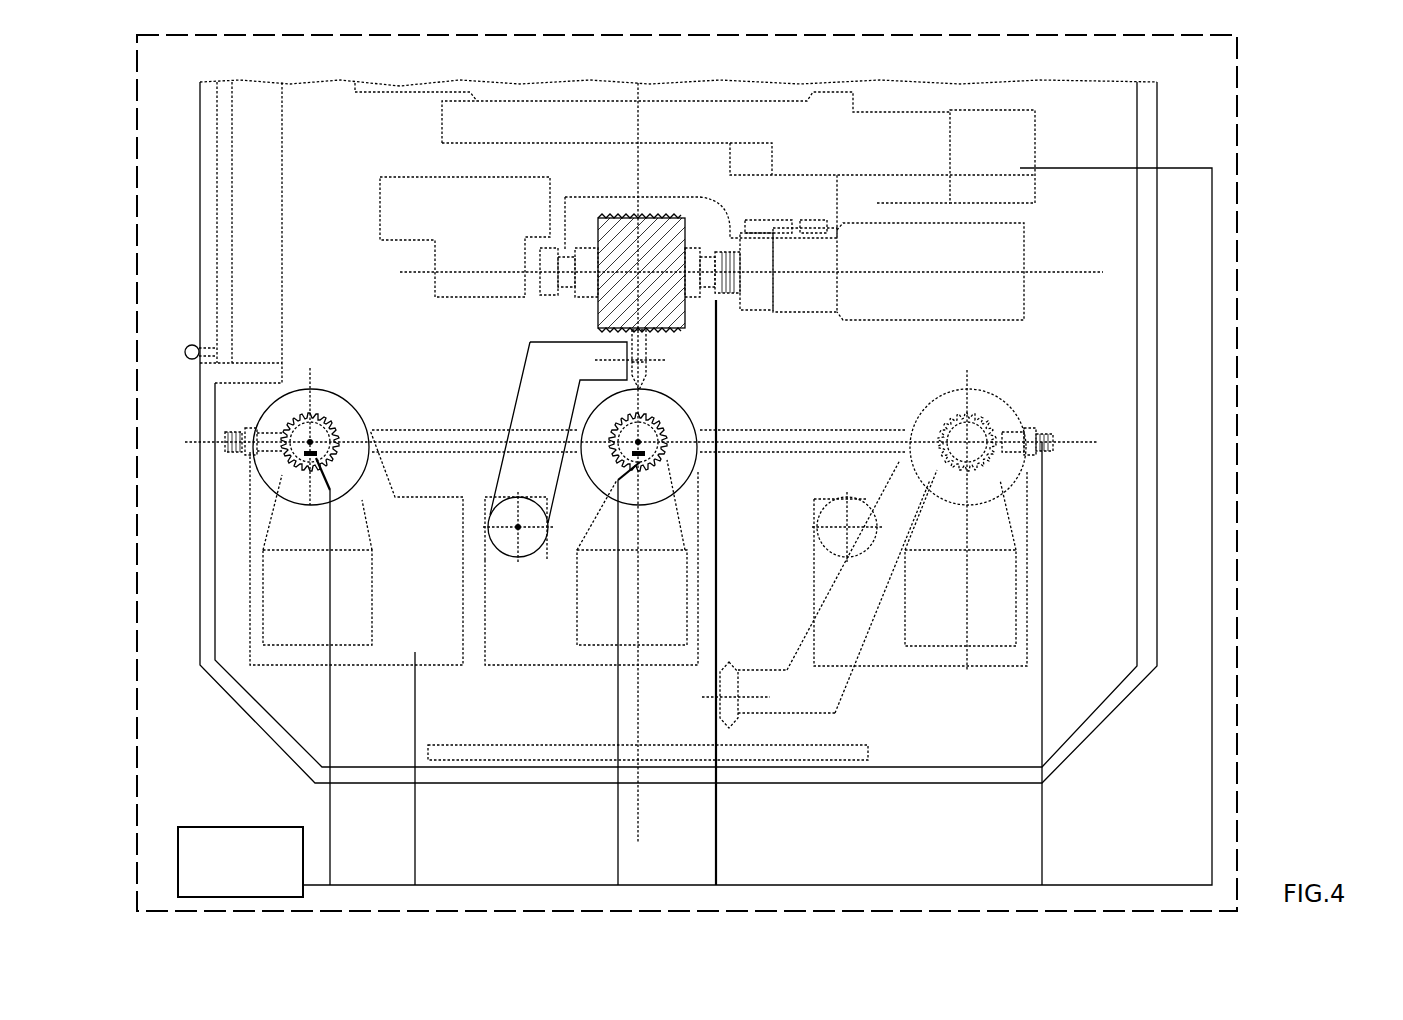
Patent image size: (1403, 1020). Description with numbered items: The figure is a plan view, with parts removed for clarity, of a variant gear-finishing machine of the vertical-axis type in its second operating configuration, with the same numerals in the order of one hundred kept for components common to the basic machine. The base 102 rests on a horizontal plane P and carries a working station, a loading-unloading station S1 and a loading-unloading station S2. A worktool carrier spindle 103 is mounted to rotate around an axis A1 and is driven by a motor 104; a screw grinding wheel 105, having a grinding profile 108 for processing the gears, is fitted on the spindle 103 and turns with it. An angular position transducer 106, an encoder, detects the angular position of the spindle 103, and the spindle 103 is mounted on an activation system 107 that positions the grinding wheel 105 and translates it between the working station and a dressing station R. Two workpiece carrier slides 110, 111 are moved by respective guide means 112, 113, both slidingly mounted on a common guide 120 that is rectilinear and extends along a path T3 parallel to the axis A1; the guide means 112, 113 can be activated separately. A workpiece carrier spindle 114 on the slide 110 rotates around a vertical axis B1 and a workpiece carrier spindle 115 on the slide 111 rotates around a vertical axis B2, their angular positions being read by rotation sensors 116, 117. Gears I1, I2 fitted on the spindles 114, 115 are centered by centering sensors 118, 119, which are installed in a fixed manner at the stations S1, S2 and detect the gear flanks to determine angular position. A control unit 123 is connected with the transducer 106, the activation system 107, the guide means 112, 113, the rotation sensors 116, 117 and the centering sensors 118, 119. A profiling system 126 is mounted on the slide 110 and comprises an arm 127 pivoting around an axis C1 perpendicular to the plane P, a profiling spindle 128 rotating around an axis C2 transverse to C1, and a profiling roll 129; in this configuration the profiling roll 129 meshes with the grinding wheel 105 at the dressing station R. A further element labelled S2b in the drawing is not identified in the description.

The horizontal plane P is at (150, 108).
The base 102 is at (703, 482).
The worktool carrier spindle 103 is at (612, 212).
The motor 104 is at (1024, 240).
The grinding wheel 105 is at (735, 232).
The angular position transducer 106 is at (745, 250).
The activation system 107 is at (975, 108).
The grinding profile 108 is at (660, 255).
The workpiece carrier slide 110 is at (380, 660).
The workpiece carrier slide 111 is at (513, 660).
The guide means 112 is at (400, 650).
The guide means 113 is at (657, 652).
The workpiece carrier spindle 114 is at (287, 446).
The workpiece carrier spindle 115 is at (668, 436).
The rotation sensor 116 is at (300, 464).
The rotation sensor 117 is at (603, 457).
The centering sensor 118 is at (243, 432).
The centering sensor 119 is at (1036, 440).
The common guide 120 is at (415, 430).
The control unit 123 is at (225, 845).
The profiling system 126 is at (510, 370).
The arm 127 is at (530, 423).
The profiling spindle 128 is at (660, 360).
The profiling roll 129 is at (600, 333).
The axis A1 is at (1043, 275).
The dressing station R is at (683, 338).
The axis C2 is at (660, 372).
The loading-unloading station S1 is at (336, 422).
The loading-unloading station S2 is at (983, 412).
The middle sprocket S2b is at (639, 447).
The gear I1 is at (322, 418).
The gear I2 is at (628, 466).
The vertical axis B1 is at (328, 458).
The vertical axis B2 is at (644, 460).
The axis C1 is at (522, 532).
The path T3 is at (1063, 445).